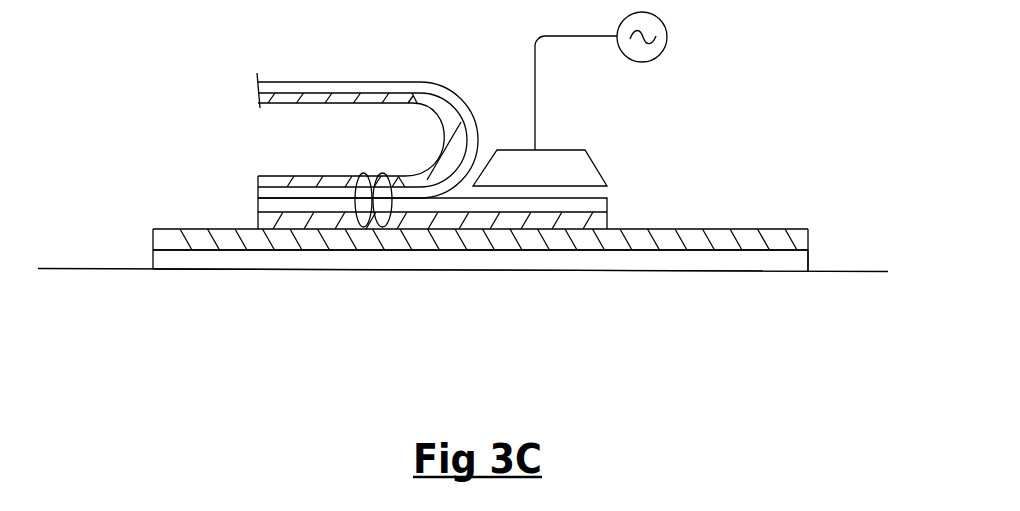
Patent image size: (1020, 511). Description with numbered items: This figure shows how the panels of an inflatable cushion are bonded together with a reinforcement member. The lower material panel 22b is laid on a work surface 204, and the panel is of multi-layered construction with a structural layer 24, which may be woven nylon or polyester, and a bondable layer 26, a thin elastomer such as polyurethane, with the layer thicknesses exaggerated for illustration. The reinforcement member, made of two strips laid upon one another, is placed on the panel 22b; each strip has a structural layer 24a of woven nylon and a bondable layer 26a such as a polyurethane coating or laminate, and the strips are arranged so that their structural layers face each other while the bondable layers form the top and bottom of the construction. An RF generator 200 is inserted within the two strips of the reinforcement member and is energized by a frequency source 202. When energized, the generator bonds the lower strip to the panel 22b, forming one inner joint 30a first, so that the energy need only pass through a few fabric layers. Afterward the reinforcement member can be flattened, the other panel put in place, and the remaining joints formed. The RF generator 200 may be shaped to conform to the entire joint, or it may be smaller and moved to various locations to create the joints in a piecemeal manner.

The RF generator 200 is at (553, 165).
The frequency source 202 is at (652, 62).
The structural layer 24a is at (598, 208).
The bondable layer 26a is at (598, 222).
The bondable layer 26 is at (808, 244).
The structural layer 24 is at (800, 265).
The material panel 22b is at (278, 257).
The inner joint 30a is at (552, 230).
The work surface 204 is at (93, 268).